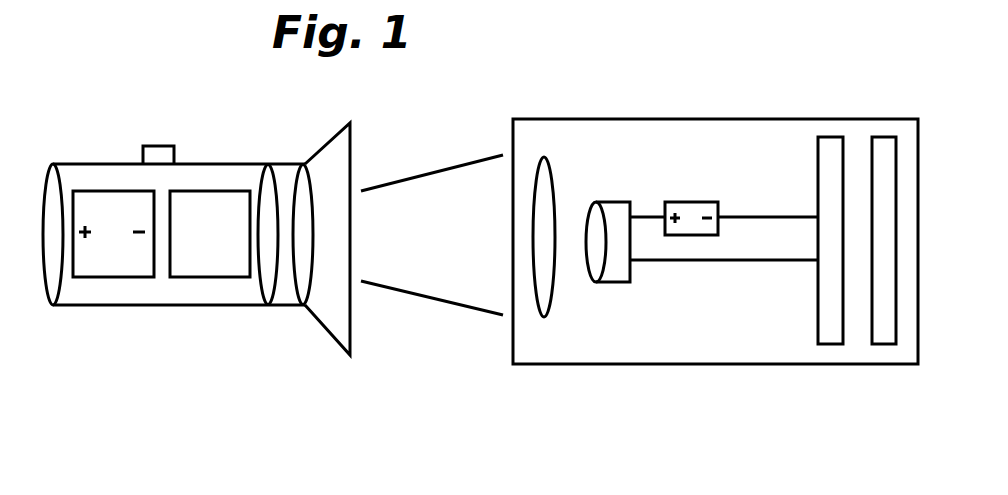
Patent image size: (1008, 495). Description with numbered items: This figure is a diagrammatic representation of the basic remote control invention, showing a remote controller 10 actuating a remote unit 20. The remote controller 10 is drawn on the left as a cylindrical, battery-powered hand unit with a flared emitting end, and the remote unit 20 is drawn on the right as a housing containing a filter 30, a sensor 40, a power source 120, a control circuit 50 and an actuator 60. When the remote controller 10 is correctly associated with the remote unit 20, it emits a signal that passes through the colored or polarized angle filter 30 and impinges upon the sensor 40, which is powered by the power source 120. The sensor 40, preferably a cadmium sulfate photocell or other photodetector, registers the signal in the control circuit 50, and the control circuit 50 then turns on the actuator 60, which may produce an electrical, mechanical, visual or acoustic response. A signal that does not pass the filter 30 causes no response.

The remote controller 10 is at (115, 146).
The remote unit 20 is at (575, 105).
The filter 30 is at (541, 319).
The sensor 40 is at (617, 283).
The control circuit 50 is at (833, 345).
The actuator 60 is at (880, 137).
The power source 120 is at (686, 202).